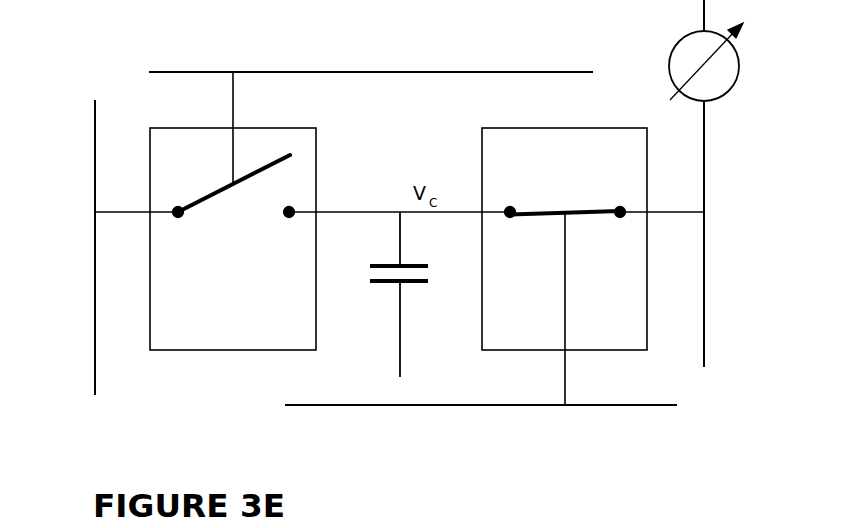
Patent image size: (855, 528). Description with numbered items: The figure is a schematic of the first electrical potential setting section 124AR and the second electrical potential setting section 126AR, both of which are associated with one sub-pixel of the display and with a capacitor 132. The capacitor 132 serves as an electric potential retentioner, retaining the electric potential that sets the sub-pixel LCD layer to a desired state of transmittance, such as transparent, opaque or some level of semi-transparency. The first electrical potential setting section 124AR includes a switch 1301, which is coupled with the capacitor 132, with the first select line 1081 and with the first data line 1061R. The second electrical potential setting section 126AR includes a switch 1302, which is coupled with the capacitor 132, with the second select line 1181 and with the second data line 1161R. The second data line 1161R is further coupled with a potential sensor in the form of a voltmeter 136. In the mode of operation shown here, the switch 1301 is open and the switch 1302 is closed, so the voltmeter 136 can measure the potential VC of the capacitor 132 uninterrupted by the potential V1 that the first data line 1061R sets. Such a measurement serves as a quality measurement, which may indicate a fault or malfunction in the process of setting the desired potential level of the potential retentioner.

The first data line 1061R is at (94, 146).
The first select line 1081 is at (193, 70).
The second data line 1161R is at (707, 128).
The second select line 1181 is at (315, 407).
The first electrical potential setting section 124AR is at (187, 352).
The second electrical potential setting section 126AR is at (592, 127).
The switch 1301 is at (203, 204).
The switch 1302 is at (603, 217).
The capacitor 132 is at (383, 284).
The voltmeter 136 is at (740, 77).